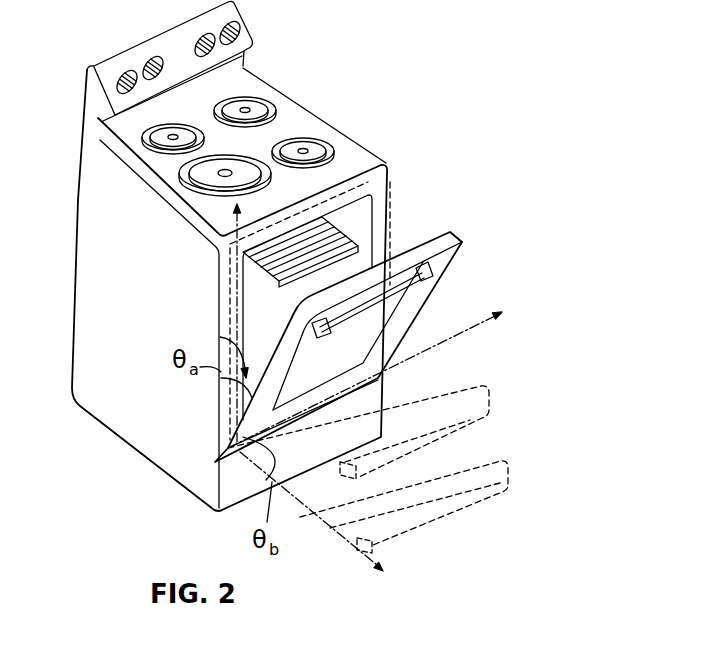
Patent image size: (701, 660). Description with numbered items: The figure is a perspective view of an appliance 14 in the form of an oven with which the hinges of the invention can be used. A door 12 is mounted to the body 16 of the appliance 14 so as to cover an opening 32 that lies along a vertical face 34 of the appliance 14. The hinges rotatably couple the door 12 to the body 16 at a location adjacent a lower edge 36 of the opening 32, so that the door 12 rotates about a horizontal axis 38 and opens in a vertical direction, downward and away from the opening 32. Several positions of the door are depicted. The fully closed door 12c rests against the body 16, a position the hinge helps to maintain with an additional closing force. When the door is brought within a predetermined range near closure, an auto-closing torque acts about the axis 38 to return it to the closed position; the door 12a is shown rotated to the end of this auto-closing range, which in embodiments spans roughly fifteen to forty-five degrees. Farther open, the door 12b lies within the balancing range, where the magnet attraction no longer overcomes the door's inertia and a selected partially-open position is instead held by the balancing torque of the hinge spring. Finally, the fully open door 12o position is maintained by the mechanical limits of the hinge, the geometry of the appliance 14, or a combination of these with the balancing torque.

The door 12 is at (377, 329).
The door at end of auto-closing range 12a is at (440, 260).
The door in balancing range 12b is at (463, 418).
The door in closed position 12c is at (365, 182).
The door in open position 12o is at (468, 503).
The appliance 14 is at (372, 45).
The body 16 is at (92, 277).
The opening 32 is at (350, 214).
The vertical face 34 is at (377, 228).
The lower edge 36 is at (238, 343).
The horizontal axis 38 is at (458, 333).